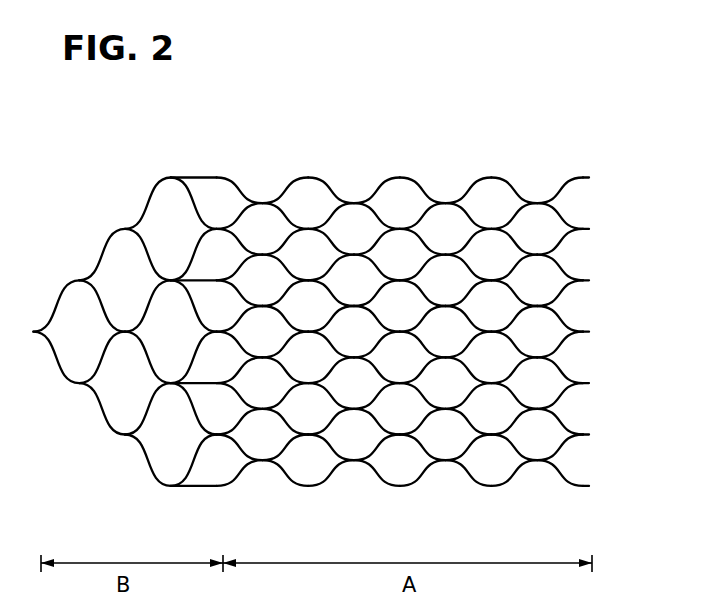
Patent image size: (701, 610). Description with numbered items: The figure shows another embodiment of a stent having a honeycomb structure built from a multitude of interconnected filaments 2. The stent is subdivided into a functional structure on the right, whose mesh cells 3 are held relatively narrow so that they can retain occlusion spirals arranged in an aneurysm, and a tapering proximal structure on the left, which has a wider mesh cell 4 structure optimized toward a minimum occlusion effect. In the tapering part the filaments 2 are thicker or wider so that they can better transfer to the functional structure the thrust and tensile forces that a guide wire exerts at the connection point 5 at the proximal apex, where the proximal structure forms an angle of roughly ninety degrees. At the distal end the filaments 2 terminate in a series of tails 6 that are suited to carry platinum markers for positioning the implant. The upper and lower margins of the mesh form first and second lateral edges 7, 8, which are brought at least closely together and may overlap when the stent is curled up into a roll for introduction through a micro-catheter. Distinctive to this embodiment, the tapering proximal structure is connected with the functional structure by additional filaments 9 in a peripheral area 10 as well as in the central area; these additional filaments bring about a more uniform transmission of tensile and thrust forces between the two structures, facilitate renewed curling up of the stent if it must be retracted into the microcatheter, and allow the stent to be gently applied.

The filaments 2 is at (311, 177).
The mesh cells 3 is at (503, 200).
The mesh cell 4 is at (120, 258).
The connection point 5 is at (33, 333).
The tails 6 is at (589, 280).
The first lateral edge 7 is at (606, 178).
The second lateral edge 8 is at (606, 486).
The additional filaments 9 is at (209, 177).
The peripheral area 10 is at (210, 277).